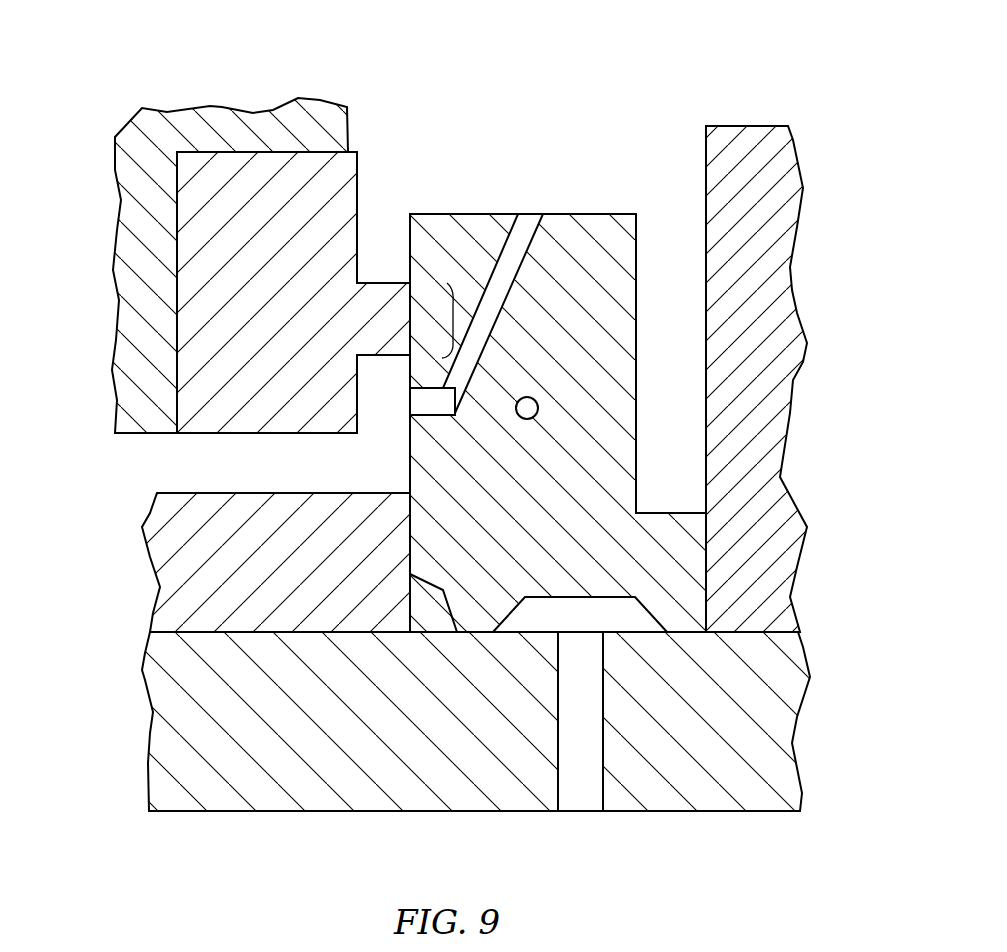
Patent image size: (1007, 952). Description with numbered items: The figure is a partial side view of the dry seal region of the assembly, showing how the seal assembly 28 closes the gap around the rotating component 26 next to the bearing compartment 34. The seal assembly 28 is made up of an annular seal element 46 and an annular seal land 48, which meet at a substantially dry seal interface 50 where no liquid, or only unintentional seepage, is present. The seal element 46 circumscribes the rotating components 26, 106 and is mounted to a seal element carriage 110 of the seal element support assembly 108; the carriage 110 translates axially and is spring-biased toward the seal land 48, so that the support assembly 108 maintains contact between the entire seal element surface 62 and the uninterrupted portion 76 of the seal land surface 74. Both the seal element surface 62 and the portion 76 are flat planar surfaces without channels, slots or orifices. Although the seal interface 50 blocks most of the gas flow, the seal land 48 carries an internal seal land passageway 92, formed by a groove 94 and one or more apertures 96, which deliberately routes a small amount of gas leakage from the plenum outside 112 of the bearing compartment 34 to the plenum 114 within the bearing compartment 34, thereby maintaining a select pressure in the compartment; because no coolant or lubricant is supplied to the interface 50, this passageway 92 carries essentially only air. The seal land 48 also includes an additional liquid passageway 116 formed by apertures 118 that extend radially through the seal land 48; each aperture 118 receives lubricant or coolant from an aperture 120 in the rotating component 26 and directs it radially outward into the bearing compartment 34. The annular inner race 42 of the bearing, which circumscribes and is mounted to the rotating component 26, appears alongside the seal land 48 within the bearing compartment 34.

The rotating component 26 is at (134, 766).
The seal assembly 28 is at (431, 154).
The bearing compartment 34 is at (430, 36).
The inner race 42 is at (793, 290).
The seal element 46 is at (362, 180).
The seal land 48 is at (599, 212).
The seal interface 50 is at (402, 283).
The seal element surface 62 is at (412, 294).
The seal land surface 74 is at (410, 247).
The portion of the seal land surface 76 is at (458, 315).
The seal land passageway 92 is at (483, 350).
The groove 94 is at (416, 403).
The aperture 96 is at (528, 228).
The rotating component 106 is at (157, 562).
The seal element support assembly 108 is at (182, 233).
The seal element carriage 110 is at (124, 212).
The plenum outside the bearing compartment 112 is at (138, 477).
The plenum within the bearing compartment 114 is at (564, 36).
The additional passageway 116 is at (517, 451).
The aperture 118 is at (527, 419).
The aperture 120 is at (578, 807).